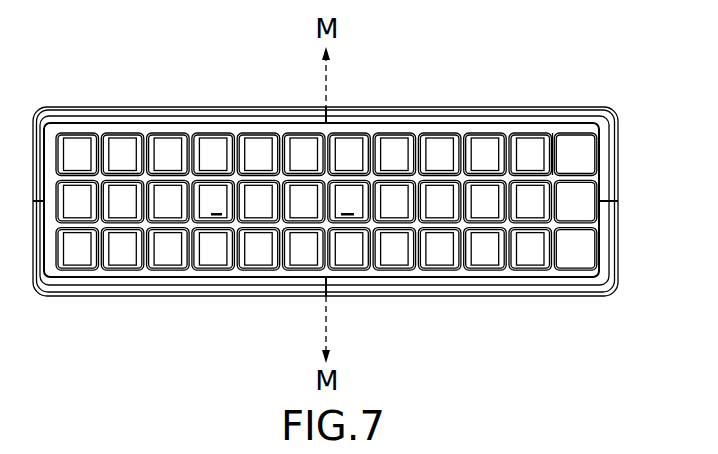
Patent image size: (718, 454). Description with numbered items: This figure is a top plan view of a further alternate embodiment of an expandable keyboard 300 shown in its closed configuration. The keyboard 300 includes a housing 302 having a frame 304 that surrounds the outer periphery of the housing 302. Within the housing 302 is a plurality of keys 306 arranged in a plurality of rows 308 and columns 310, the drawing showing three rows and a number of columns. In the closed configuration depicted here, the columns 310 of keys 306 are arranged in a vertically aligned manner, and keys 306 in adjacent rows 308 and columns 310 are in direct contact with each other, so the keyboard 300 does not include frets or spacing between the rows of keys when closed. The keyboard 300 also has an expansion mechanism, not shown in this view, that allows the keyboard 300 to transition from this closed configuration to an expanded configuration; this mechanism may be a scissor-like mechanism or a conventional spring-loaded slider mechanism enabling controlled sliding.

The keyboard 300 is at (80, 93).
The housing 302 is at (553, 133).
The frame 304 is at (362, 106).
The keys 306 is at (580, 156).
The rows 308 is at (608, 227).
The columns 310 is at (468, 278).